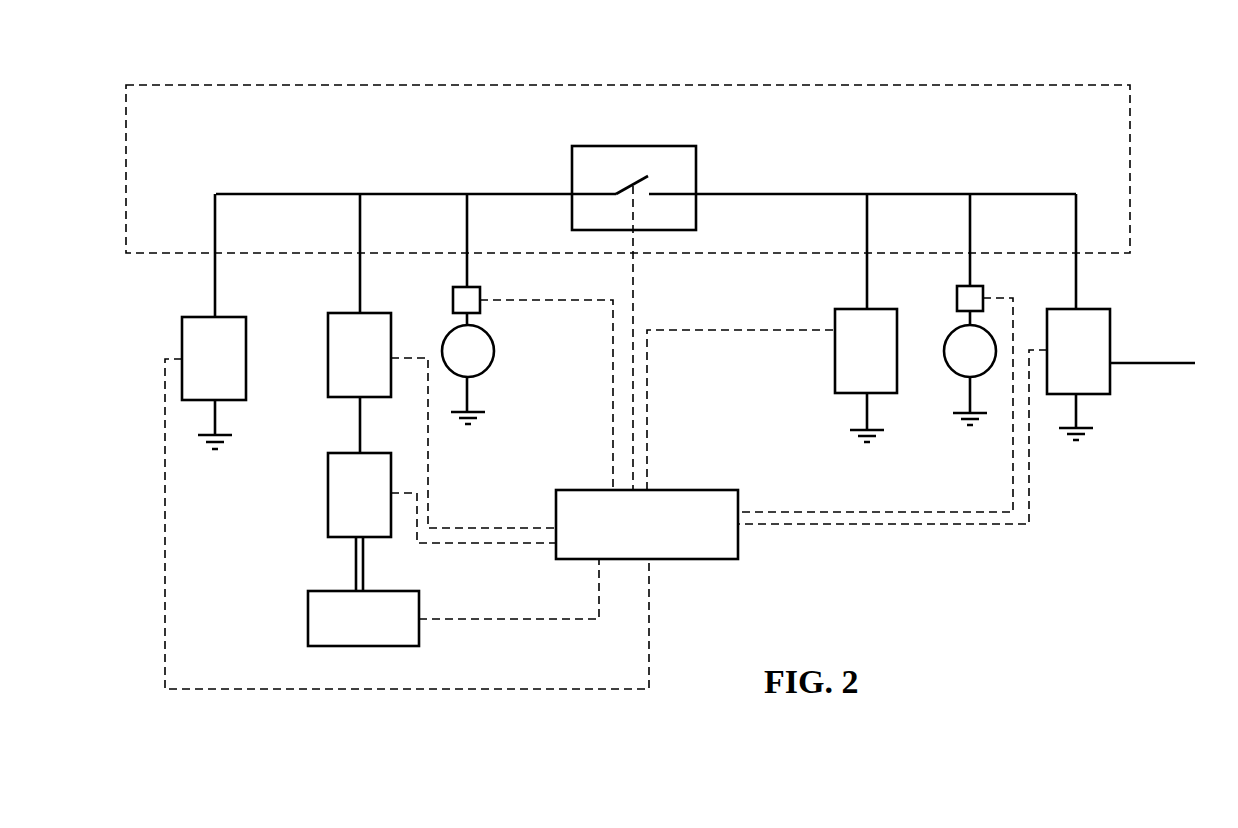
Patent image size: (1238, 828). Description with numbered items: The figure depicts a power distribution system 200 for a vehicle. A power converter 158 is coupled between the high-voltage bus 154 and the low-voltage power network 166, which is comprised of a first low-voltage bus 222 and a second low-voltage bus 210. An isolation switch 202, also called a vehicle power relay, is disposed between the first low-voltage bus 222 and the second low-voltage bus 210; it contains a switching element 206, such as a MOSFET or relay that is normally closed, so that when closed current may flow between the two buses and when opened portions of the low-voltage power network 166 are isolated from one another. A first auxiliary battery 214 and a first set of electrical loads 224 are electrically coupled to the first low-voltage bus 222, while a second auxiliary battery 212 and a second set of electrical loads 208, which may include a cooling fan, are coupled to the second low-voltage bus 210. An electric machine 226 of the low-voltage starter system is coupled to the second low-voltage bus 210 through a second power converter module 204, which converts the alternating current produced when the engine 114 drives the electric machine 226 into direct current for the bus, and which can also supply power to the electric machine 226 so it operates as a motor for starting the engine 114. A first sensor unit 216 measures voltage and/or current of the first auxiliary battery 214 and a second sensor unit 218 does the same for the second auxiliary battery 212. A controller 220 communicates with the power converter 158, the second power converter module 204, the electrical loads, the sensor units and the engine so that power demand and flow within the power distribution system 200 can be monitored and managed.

The low-voltage power network 166 is at (920, 86).
The second low-voltage bus 210 is at (312, 194).
The first low-voltage bus 222 is at (920, 194).
The isolation switch 202 is at (650, 150).
The switching element 206 is at (632, 187).
The second set of electrical loads 208 is at (246, 359).
The second power converter module 204 is at (328, 388).
The second sensor unit 218 is at (453, 297).
The second auxiliary battery 212 is at (494, 351).
The first set of electrical loads 224 is at (835, 350).
The first sensor unit 216 is at (957, 298).
The first auxiliary battery 214 is at (956, 373).
The power converter 158 is at (1110, 350).
The high-voltage bus 154 is at (1153, 363).
The controller 220 is at (556, 557).
The electric machine 226 is at (328, 495).
The engine 114 is at (308, 617).
The power distribution system 200 is at (983, 618).